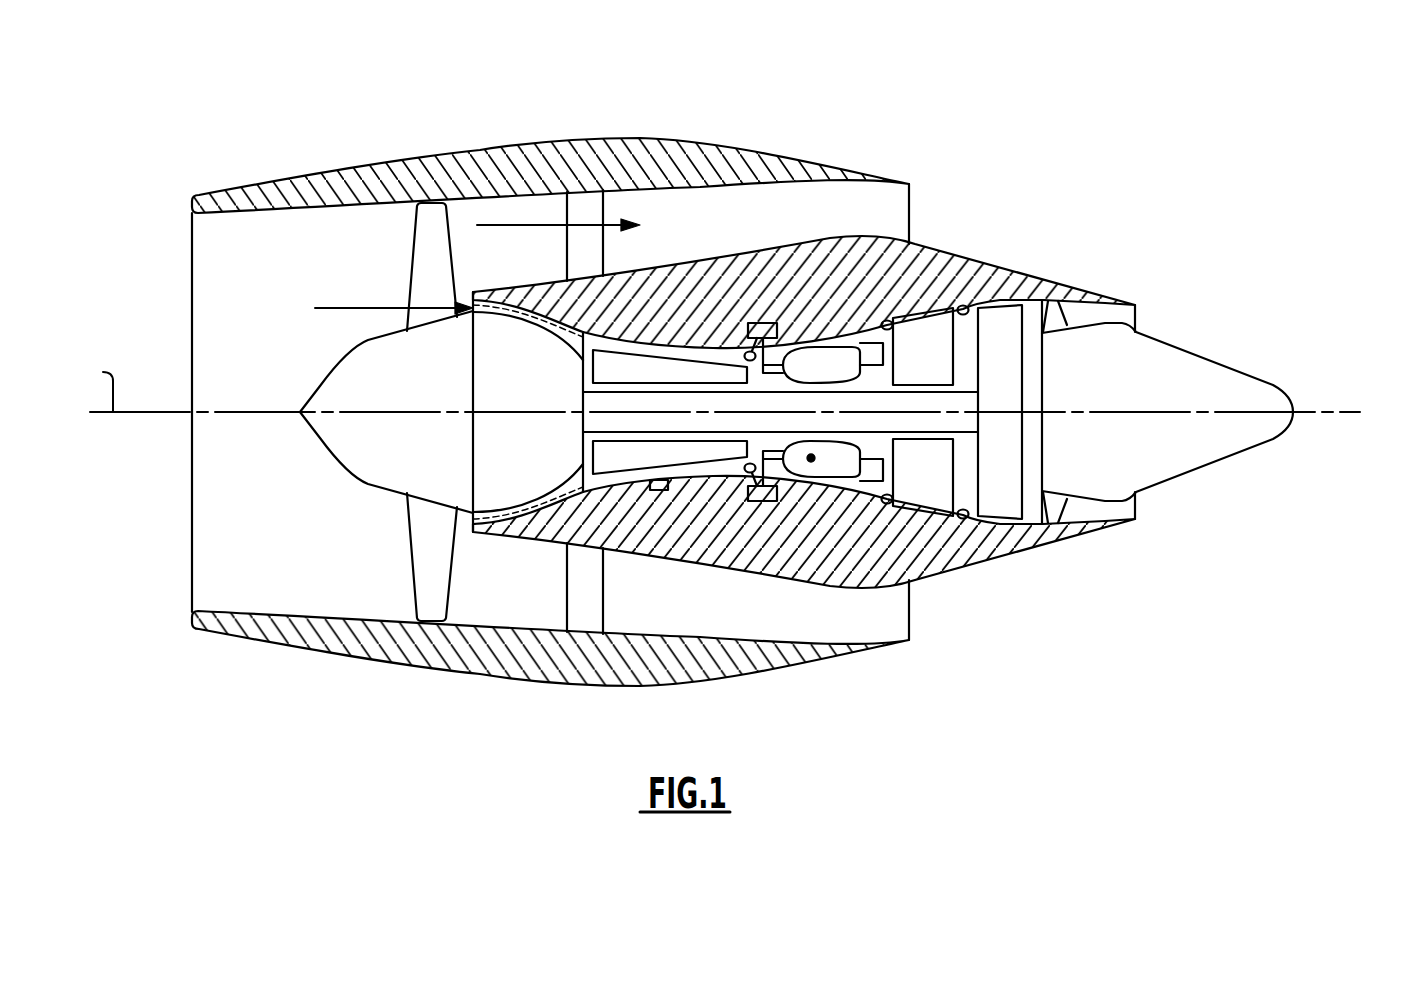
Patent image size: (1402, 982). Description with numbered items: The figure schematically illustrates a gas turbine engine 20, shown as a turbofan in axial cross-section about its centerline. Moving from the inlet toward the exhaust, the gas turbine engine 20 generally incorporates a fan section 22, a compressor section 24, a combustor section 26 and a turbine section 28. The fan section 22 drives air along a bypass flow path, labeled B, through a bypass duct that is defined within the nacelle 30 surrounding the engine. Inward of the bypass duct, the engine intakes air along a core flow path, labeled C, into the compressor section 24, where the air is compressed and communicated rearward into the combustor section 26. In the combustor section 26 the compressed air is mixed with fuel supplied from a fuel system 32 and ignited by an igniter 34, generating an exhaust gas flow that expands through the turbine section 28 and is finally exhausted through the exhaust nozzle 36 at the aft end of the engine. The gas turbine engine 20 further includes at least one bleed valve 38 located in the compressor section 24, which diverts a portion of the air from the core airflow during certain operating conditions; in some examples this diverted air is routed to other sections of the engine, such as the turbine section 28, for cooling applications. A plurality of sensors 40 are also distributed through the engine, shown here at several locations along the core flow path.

The gas turbine engine 20 is at (207, 123).
The fan section 22 is at (343, 120).
The compressor section 24 is at (592, 257).
The combustor section 26 is at (763, 232).
The turbine section 28 is at (900, 232).
The nacelle 30 is at (542, 167).
The fuel system 32 is at (768, 503).
The igniter 34 is at (811, 470).
The exhaust nozzle 36 is at (1183, 380).
The bleed valve 38 is at (658, 491).
The sensors 40 is at (745, 474).